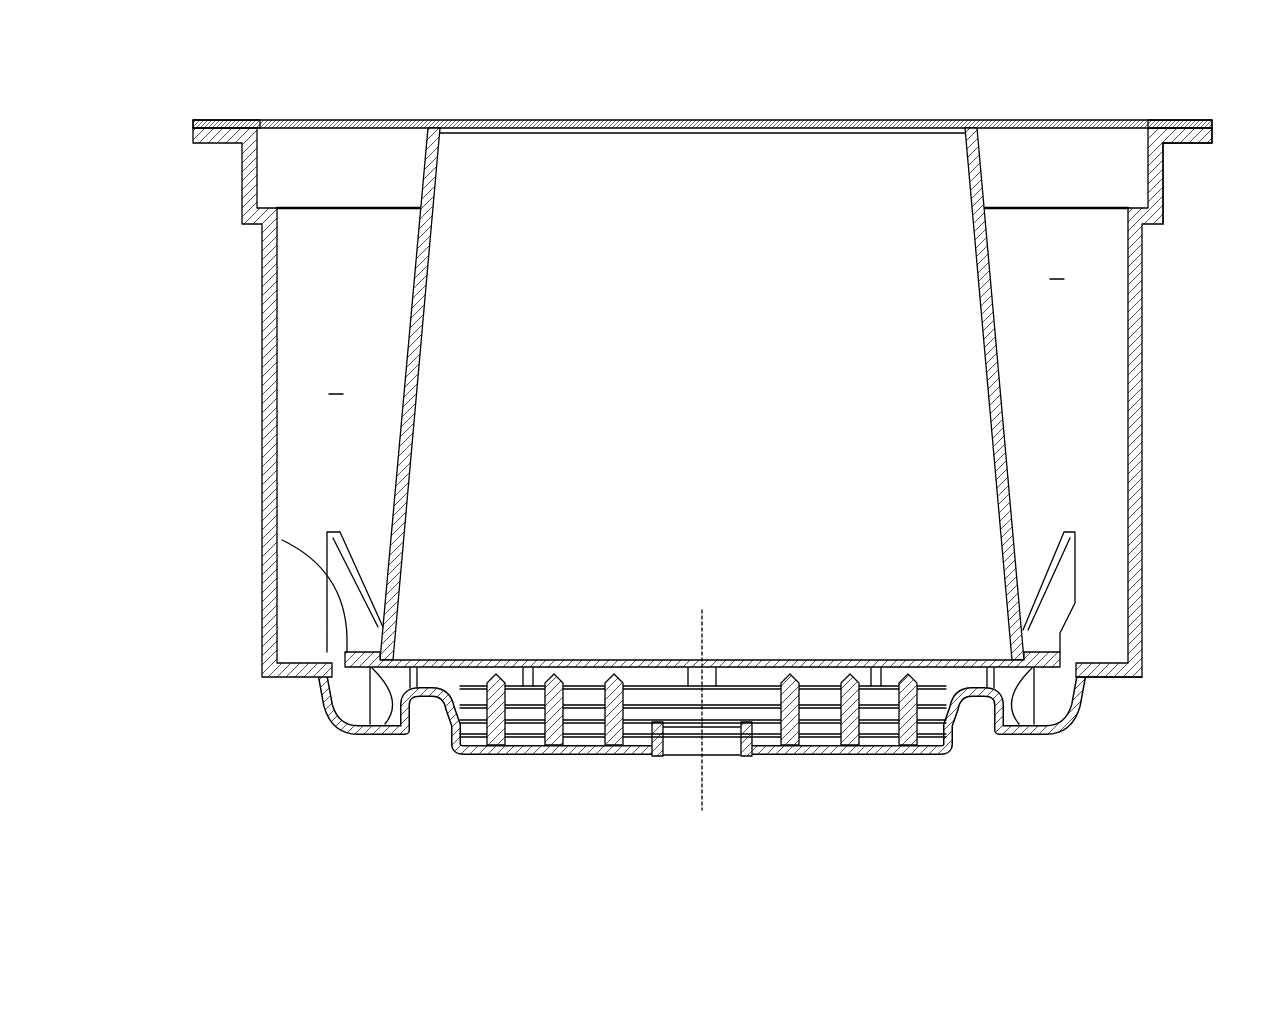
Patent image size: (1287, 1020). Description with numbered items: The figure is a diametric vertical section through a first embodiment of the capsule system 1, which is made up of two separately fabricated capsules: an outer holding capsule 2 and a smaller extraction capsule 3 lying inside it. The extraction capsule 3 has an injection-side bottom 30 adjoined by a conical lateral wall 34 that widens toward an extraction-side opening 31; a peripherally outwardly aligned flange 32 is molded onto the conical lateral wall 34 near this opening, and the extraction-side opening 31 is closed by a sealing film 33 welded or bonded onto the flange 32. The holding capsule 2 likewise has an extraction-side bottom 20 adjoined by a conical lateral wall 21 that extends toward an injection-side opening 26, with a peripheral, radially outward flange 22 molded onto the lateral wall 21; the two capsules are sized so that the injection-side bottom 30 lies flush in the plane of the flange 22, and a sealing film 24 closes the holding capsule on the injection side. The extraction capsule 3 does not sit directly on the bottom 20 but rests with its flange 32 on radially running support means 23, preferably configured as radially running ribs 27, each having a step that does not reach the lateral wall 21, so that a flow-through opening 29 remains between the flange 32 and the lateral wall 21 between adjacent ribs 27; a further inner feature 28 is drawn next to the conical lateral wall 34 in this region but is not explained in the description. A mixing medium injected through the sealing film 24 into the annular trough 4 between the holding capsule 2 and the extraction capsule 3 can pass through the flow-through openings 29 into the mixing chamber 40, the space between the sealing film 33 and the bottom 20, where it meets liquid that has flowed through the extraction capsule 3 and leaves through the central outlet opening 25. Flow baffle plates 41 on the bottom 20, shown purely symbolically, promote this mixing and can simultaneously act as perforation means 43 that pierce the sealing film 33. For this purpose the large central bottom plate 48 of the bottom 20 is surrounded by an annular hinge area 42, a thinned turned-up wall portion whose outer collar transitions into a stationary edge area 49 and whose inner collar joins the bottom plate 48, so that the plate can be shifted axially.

The capsule system 1 is at (1183, 202).
The holding capsule 2 is at (1163, 348).
The extraction capsule 3 is at (386, 290).
The annular trough 4 is at (697, 324).
The extraction-side bottom 20 is at (373, 758).
The conical lateral wall 21 is at (1135, 593).
The flange 22 is at (1175, 118).
The support means 23 is at (1023, 630).
The sealing film 24 is at (356, 118).
The central outlet opening 25 is at (736, 742).
The injection-side opening 26 is at (1085, 93).
The radially running rib 27 is at (1142, 679).
The guide fin 28 is at (1048, 562).
The flow-through opening 29 is at (337, 589).
The injection-side bottom 30 is at (683, 127).
The extraction-side opening 31 is at (618, 610).
The flange 32 is at (344, 660).
The sealing film 33 is at (822, 658).
The conical lateral wall 34 is at (408, 332).
The mixing chamber 40 is at (718, 694).
The flow baffle plate 41 is at (853, 742).
The annular hinge area 42 is at (978, 738).
The perforation means 43 is at (906, 742).
The central bottom plate 48 is at (553, 757).
The stationary edge area 49 is at (1068, 735).